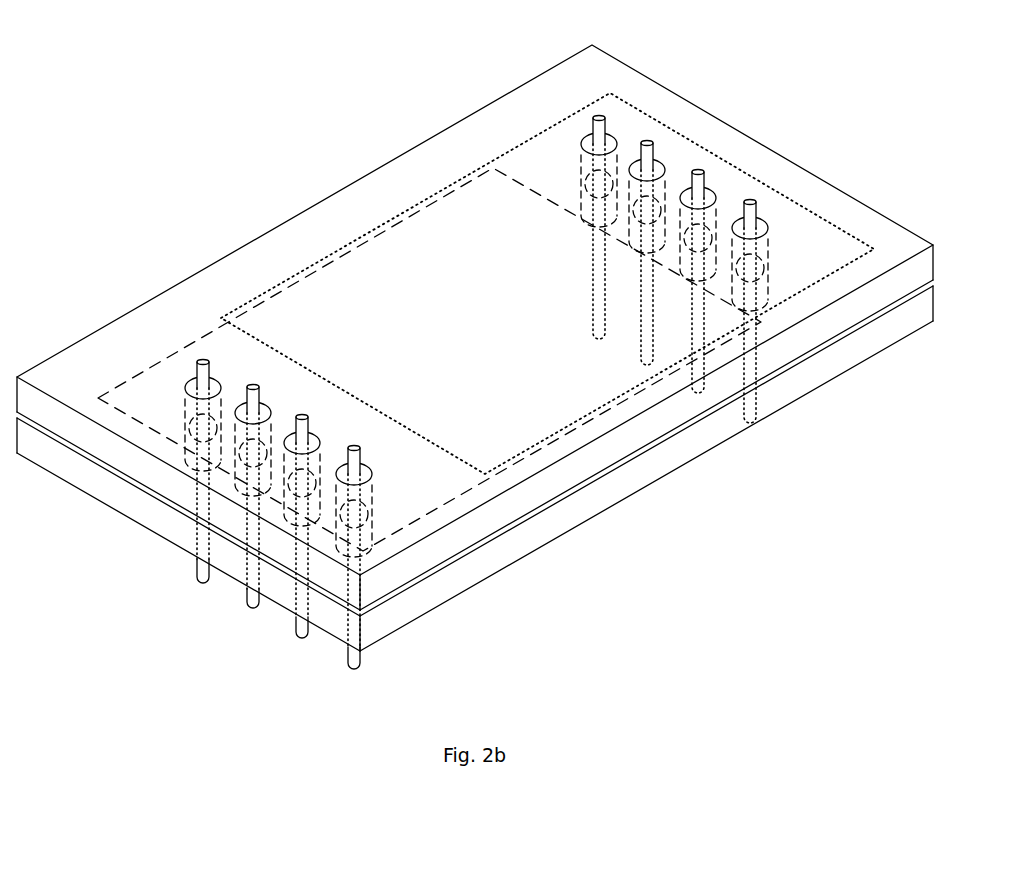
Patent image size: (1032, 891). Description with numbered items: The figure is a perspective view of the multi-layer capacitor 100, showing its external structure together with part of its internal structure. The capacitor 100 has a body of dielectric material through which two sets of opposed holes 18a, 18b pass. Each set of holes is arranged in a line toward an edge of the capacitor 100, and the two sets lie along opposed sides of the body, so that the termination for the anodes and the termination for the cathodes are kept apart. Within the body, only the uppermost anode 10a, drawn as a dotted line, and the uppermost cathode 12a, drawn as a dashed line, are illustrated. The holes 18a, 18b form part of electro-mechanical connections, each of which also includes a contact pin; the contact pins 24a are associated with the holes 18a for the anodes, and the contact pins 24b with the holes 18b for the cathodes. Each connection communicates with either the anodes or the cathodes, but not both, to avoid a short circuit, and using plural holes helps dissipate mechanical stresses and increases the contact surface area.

The multi-layer capacitor 100 is at (403, 147).
The uppermost anode 10a is at (655, 117).
The uppermost cathode 12a is at (160, 358).
The holes 18a is at (612, 130).
The holes 18b is at (191, 400).
The contact pins 24a is at (350, 447).
The contact pins 24b is at (744, 221).